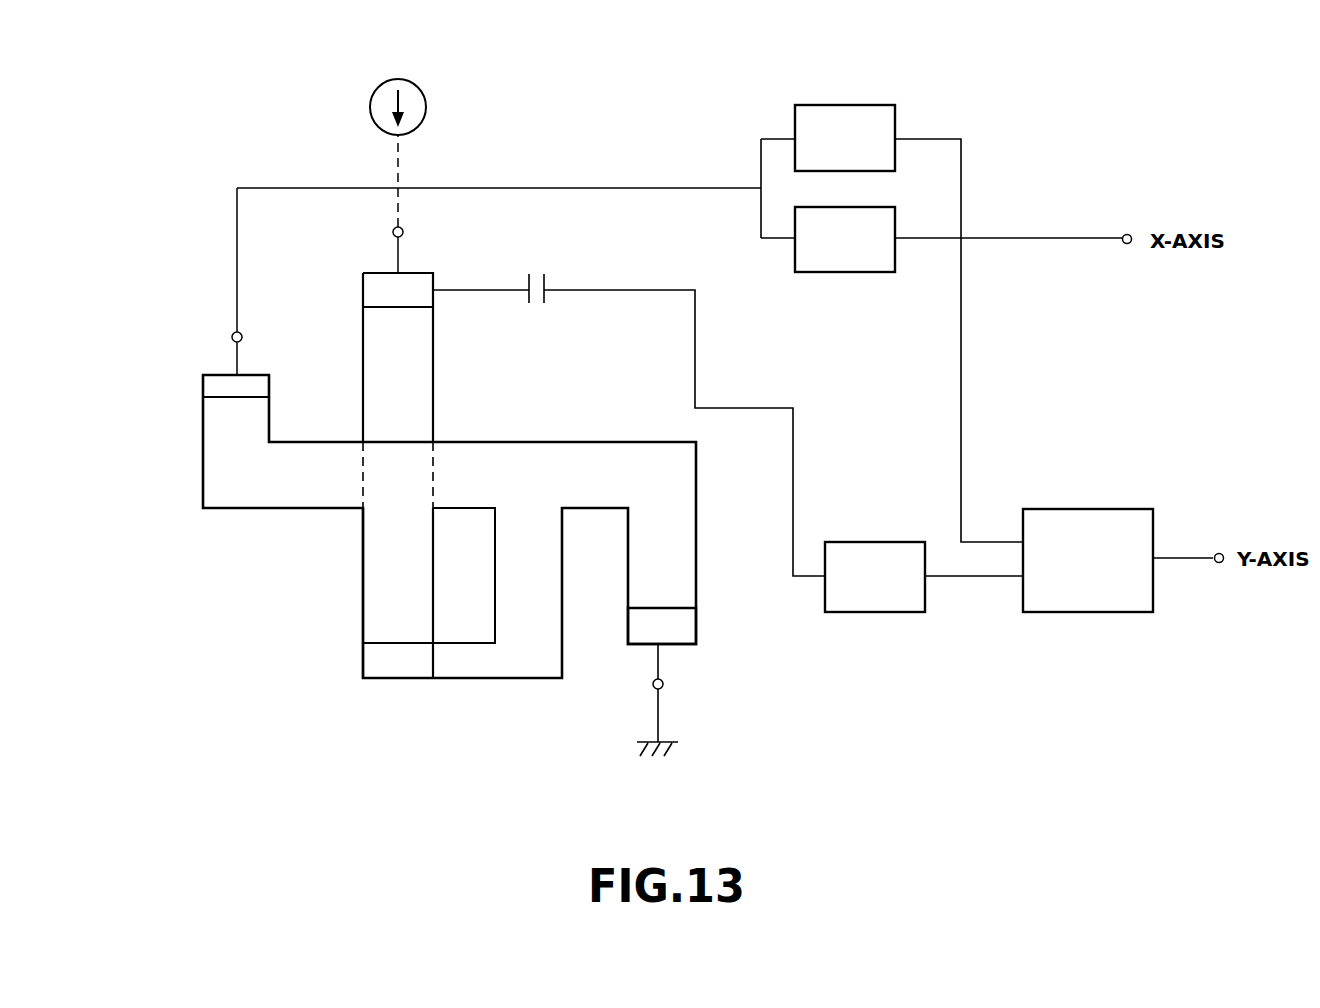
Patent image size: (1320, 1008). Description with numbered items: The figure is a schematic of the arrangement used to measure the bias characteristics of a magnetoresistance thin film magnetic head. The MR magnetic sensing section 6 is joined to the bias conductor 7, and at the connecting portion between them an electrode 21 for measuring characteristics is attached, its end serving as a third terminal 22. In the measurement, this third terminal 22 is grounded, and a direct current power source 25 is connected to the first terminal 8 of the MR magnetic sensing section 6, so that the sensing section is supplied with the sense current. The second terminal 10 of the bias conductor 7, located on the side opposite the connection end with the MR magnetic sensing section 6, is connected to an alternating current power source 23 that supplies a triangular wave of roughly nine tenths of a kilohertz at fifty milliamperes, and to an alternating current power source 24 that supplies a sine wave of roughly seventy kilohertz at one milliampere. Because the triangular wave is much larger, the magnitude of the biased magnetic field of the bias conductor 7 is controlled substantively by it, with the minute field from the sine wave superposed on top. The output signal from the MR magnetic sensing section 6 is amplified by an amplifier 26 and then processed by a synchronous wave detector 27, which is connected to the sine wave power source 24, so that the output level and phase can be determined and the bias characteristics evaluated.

The MR magnetic sensing section 6 is at (378, 560).
The bias conductor 7 is at (536, 466).
The first terminal 8 is at (392, 232).
The second terminal 10 is at (232, 337).
The electrode for measuring characteristics 21 is at (675, 572).
The third terminal 22 is at (663, 685).
The alternating current power source 23 is at (848, 270).
The alternating current power source 24 is at (857, 107).
The direct current power source 25 is at (413, 101).
The amplifier 26 is at (876, 604).
The synchronous wave detector 27 is at (1135, 520).